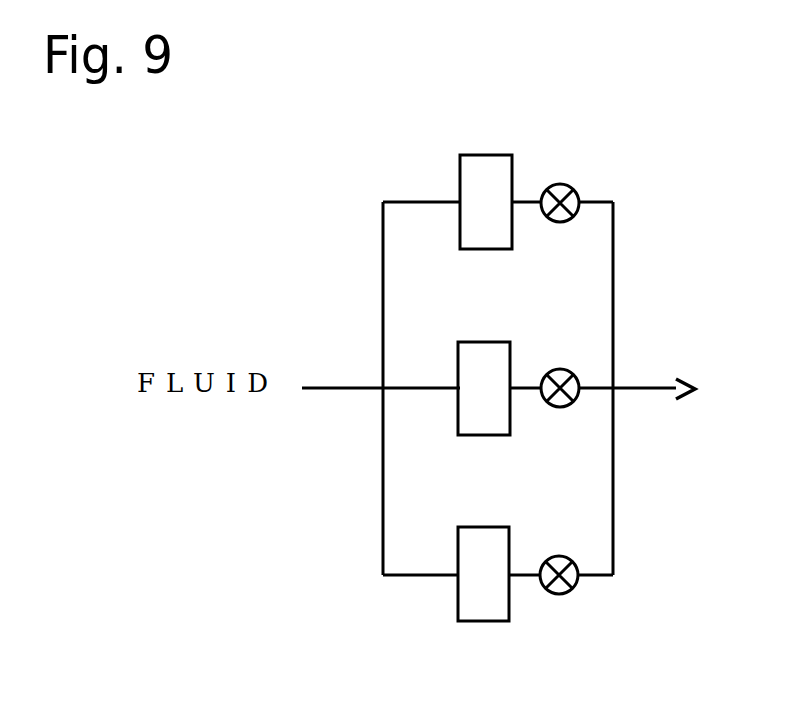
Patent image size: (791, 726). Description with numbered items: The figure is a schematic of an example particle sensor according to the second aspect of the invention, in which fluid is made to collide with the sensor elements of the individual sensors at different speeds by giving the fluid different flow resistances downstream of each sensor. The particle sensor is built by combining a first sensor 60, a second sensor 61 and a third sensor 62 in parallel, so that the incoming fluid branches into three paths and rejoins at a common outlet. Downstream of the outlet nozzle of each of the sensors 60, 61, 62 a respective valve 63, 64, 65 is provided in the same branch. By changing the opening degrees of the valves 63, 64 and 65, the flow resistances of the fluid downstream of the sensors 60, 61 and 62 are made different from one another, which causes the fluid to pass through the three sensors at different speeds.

The first sensor 60 is at (487, 155).
The second sensor 61 is at (486, 342).
The third sensor 62 is at (486, 527).
The valve 63 is at (560, 183).
The valve 64 is at (561, 368).
The valve 65 is at (560, 555).